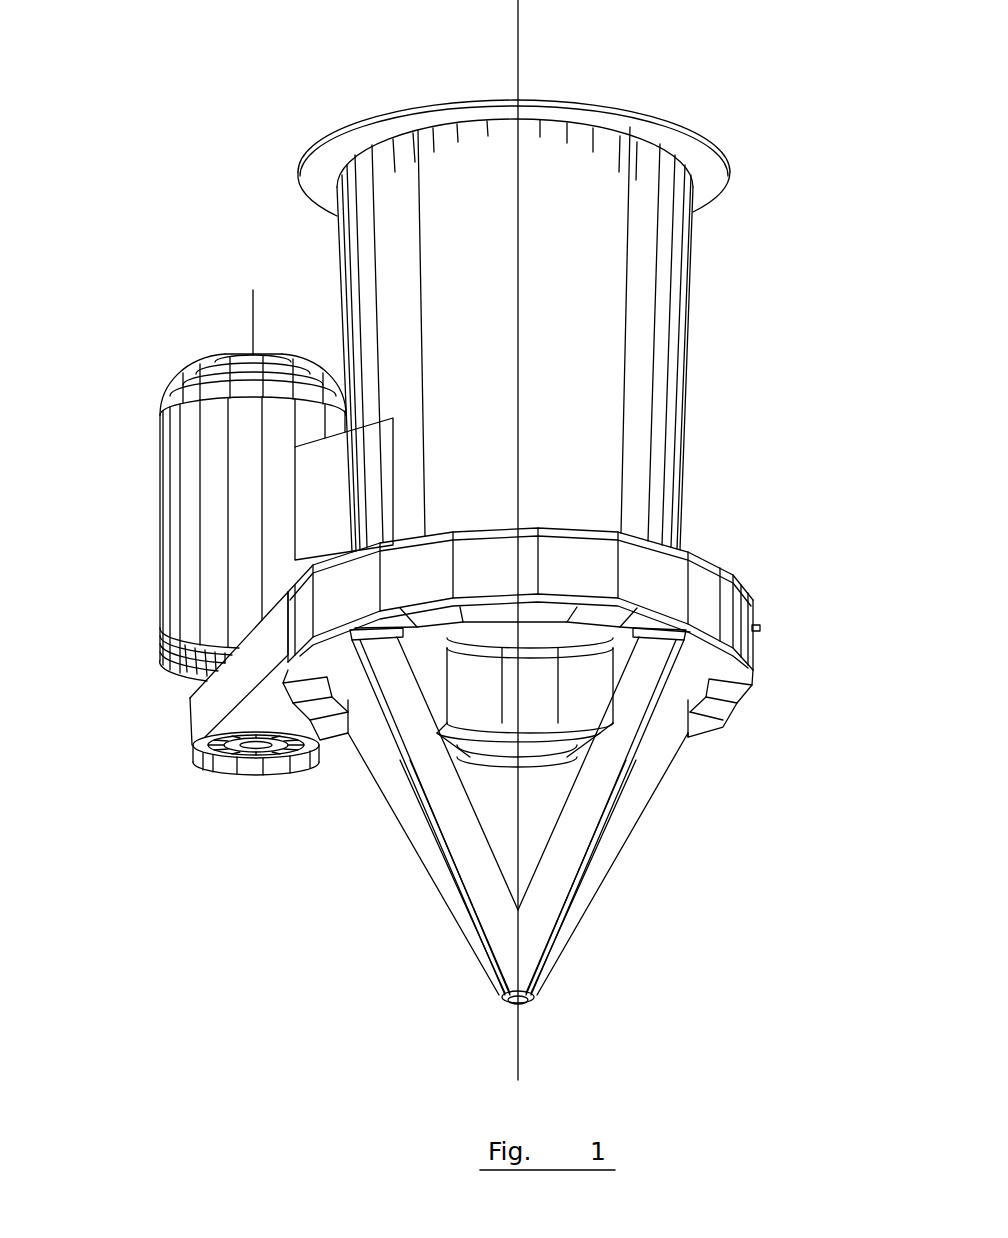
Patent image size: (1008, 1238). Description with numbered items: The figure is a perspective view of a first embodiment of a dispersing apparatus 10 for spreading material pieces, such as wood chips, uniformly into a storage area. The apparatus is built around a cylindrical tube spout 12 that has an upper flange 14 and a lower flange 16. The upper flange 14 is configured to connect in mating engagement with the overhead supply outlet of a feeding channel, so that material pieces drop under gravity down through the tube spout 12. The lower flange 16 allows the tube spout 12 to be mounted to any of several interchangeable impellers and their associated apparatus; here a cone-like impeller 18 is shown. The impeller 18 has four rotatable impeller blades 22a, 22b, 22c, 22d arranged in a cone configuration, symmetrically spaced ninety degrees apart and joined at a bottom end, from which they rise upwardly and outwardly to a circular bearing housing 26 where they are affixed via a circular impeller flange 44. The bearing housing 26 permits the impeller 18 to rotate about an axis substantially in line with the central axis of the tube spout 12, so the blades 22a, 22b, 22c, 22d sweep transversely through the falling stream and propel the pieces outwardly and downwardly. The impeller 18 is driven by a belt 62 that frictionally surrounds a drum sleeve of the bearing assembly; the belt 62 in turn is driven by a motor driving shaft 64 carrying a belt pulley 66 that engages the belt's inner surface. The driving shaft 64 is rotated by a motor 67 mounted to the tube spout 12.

The dispersing apparatus 10 is at (703, 100).
The cylindrical tube spout 12 is at (682, 345).
The upper flange 14 is at (723, 188).
The lower flange 16 is at (735, 563).
The cone-like impeller 18 is at (641, 839).
The impeller blade 22a is at (393, 822).
The impeller blade 22b is at (447, 895).
The impeller blade 22c is at (580, 892).
The impeller blade 22d is at (665, 790).
The circular bearing housing 26 is at (760, 629).
The impeller flange 44 is at (720, 683).
The belt 62 is at (678, 548).
The motor driving shaft 64 is at (250, 757).
The belt pulley 66 is at (203, 770).
The motor 67 is at (172, 560).